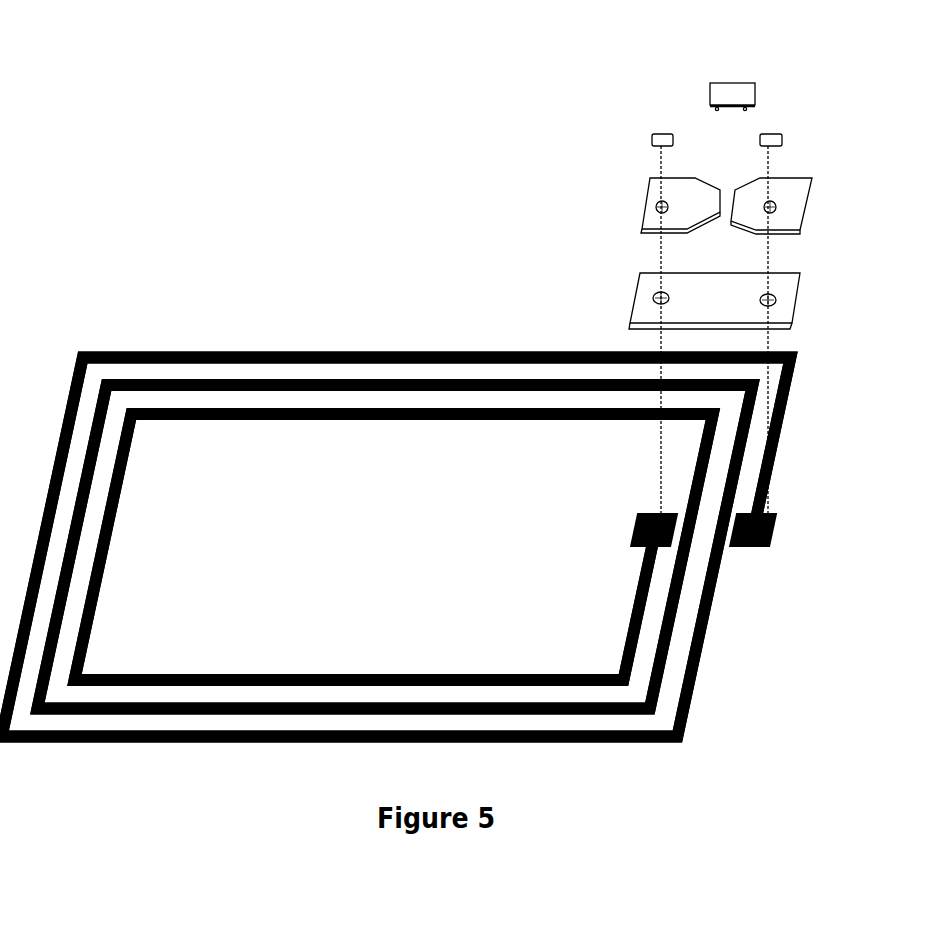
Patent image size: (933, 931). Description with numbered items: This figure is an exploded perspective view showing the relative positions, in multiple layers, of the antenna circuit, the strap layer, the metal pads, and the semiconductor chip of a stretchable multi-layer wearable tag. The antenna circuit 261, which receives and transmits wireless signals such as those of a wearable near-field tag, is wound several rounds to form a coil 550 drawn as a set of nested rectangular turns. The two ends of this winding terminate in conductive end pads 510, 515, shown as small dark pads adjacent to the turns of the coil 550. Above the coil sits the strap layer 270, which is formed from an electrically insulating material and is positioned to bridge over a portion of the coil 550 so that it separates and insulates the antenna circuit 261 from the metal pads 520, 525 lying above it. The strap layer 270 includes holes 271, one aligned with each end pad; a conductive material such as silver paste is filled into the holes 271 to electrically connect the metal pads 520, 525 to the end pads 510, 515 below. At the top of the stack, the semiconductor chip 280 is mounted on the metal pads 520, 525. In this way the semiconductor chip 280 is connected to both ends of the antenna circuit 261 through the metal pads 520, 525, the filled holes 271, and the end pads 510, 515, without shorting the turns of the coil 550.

The antenna circuit 261 is at (189, 341).
The strap layer 270 is at (787, 283).
The holes 271 is at (650, 312).
The semiconductor chip 280 is at (745, 92).
The conductive end pad 510 is at (636, 535).
The conductive end pad 515 is at (770, 530).
The metal pad 520 is at (648, 207).
The metal pad 525 is at (792, 200).
The coil 550 is at (712, 624).